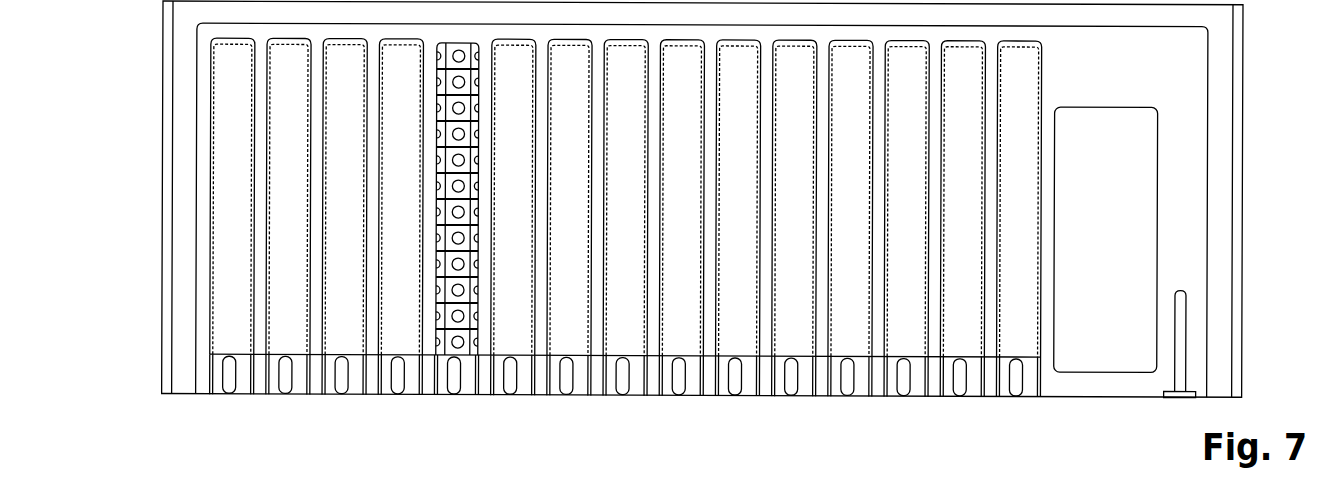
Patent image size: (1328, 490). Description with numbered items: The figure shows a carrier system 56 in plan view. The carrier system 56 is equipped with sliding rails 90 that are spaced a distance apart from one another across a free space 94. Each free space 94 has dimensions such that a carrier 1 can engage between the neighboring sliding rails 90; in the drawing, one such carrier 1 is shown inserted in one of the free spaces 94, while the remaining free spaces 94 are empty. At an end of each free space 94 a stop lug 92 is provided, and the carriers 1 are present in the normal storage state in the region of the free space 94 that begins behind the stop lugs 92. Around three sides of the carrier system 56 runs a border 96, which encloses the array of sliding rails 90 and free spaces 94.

The carrier system 56 is at (137, 164).
The border 96 is at (177, 296).
The free space 94 is at (283, 318).
The carrier 1 is at (466, 344).
The stop lug 92 is at (565, 380).
The sliding rail 90 is at (710, 385).